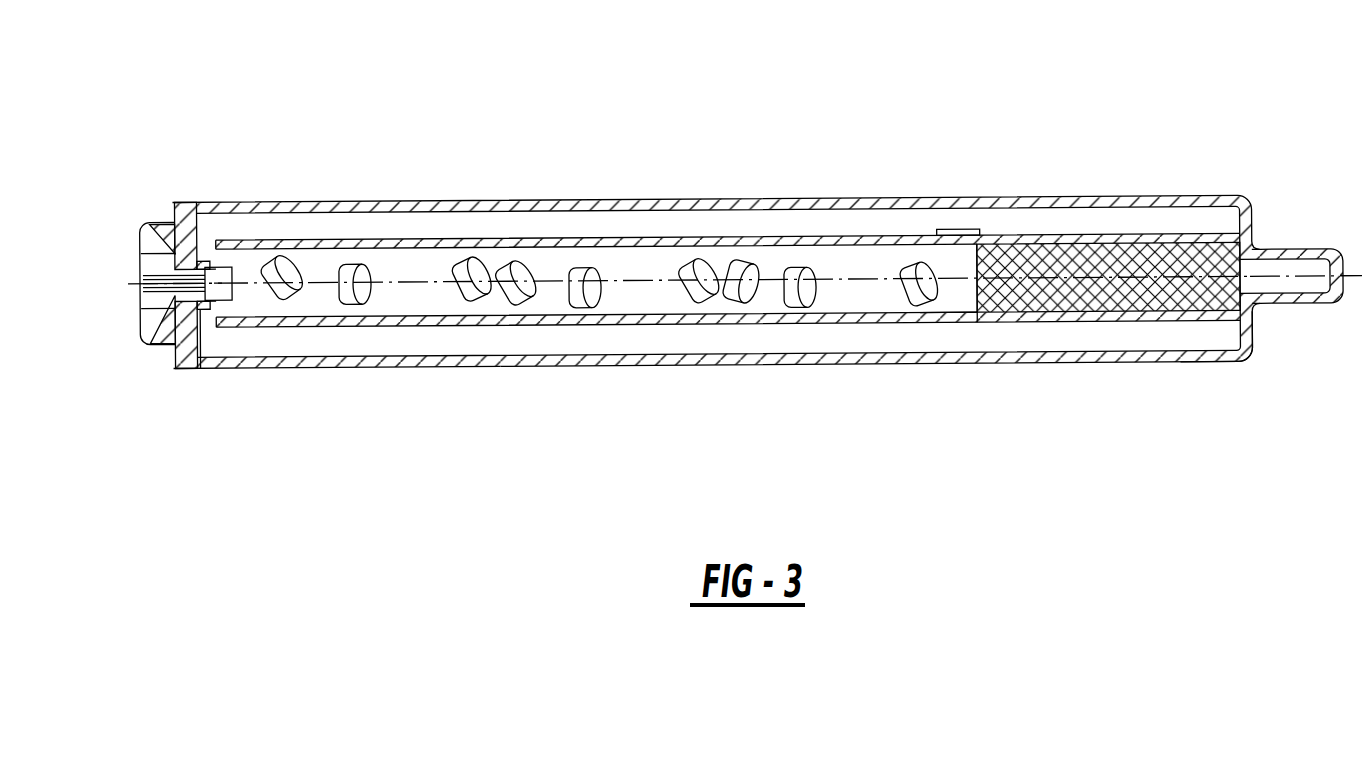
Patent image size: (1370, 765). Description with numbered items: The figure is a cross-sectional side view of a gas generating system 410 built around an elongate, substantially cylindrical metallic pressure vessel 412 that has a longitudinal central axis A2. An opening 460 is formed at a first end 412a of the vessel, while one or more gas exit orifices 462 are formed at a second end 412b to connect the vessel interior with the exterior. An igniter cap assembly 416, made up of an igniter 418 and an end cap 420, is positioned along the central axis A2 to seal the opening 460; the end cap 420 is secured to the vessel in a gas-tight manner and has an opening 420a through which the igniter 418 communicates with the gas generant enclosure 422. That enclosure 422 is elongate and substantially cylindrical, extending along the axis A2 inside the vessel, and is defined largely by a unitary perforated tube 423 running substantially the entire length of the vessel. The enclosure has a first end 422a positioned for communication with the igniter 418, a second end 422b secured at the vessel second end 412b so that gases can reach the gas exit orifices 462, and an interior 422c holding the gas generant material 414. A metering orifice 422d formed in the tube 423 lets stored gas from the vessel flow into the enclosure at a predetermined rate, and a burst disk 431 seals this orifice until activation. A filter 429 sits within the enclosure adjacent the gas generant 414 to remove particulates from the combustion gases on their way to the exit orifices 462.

The gas generating system 410 is at (448, 538).
The pressure vessel 412 is at (310, 205).
The first end of vessel 412a is at (258, 364).
The second end of vessel 412b is at (1203, 356).
The gas generant material 414 is at (514, 294).
The igniter cap assembly 416 is at (140, 248).
The igniter 418 is at (147, 336).
The end cap 420 is at (163, 336).
The opening in end cap 420a is at (188, 200).
The gas generant enclosure 422 is at (414, 237).
The first end of enclosure 422a is at (240, 237).
The second end of enclosure 422b is at (1160, 319).
The interior of enclosure 422c is at (408, 300).
The orifice 422d is at (962, 238).
The tube 423 is at (937, 316).
The filter 429 is at (1046, 266).
The burst disk 431 is at (968, 233).
The opening 460 is at (200, 367).
The gas exit orifices 462 is at (1301, 252).
The longitudinal central axis A2 is at (1358, 280).